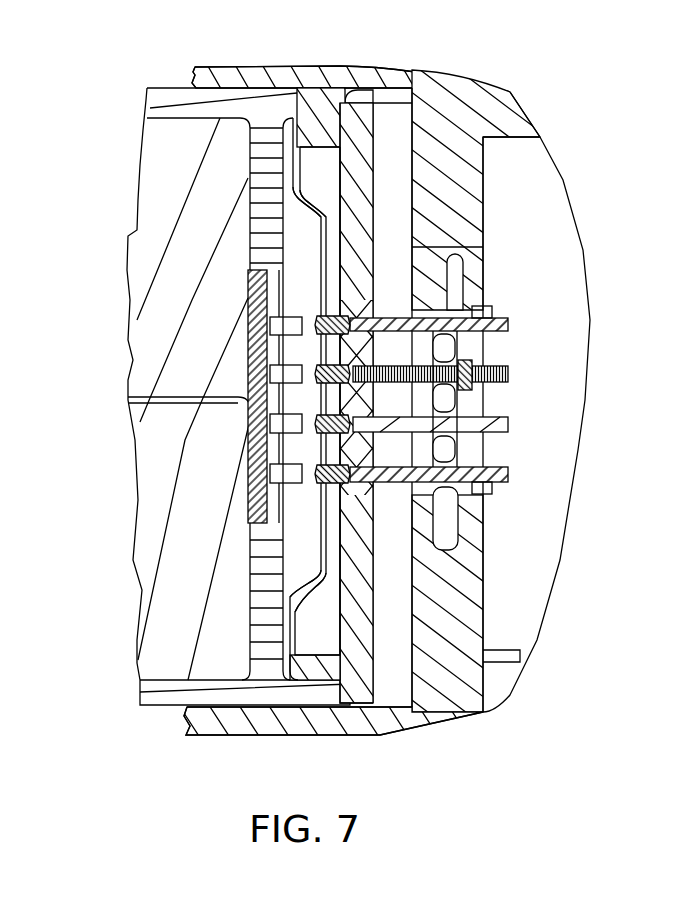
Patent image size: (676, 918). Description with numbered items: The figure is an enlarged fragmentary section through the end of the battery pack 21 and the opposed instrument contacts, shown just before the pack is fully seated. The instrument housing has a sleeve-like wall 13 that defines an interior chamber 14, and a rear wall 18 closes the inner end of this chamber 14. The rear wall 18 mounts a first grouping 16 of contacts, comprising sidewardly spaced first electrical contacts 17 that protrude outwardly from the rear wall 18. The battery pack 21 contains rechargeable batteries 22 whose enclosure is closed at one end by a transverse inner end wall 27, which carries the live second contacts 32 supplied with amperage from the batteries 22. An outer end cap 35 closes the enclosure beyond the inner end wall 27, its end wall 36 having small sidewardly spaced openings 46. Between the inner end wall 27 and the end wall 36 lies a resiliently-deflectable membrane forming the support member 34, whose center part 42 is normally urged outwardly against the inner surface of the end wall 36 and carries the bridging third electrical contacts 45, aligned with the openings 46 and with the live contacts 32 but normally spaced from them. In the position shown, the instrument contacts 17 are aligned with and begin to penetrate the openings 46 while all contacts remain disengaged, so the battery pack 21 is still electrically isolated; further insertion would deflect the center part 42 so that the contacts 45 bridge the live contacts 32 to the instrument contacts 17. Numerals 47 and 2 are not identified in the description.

The sleeve-like wall 13 is at (260, 75).
The interior chamber 14 is at (390, 693).
The first grouping of contacts 16 is at (511, 360).
The first electrical contacts 17 is at (443, 303).
The rear wall 18 is at (455, 188).
The battery pack 21 is at (147, 88).
The rechargeable batteries 22 is at (141, 320).
The inner end wall 27 is at (265, 199).
The second contacts 32 is at (285, 327).
The support member 34 is at (305, 214).
The outer end cap 35 is at (378, 640).
The end wall 36 is at (360, 603).
The center part 42 is at (333, 250).
The third electrical contacts 45 is at (315, 343).
The openings 46 is at (345, 492).
The bracket lower bend 47 is at (310, 548).
The partial numeral 2 is at (4, 190).